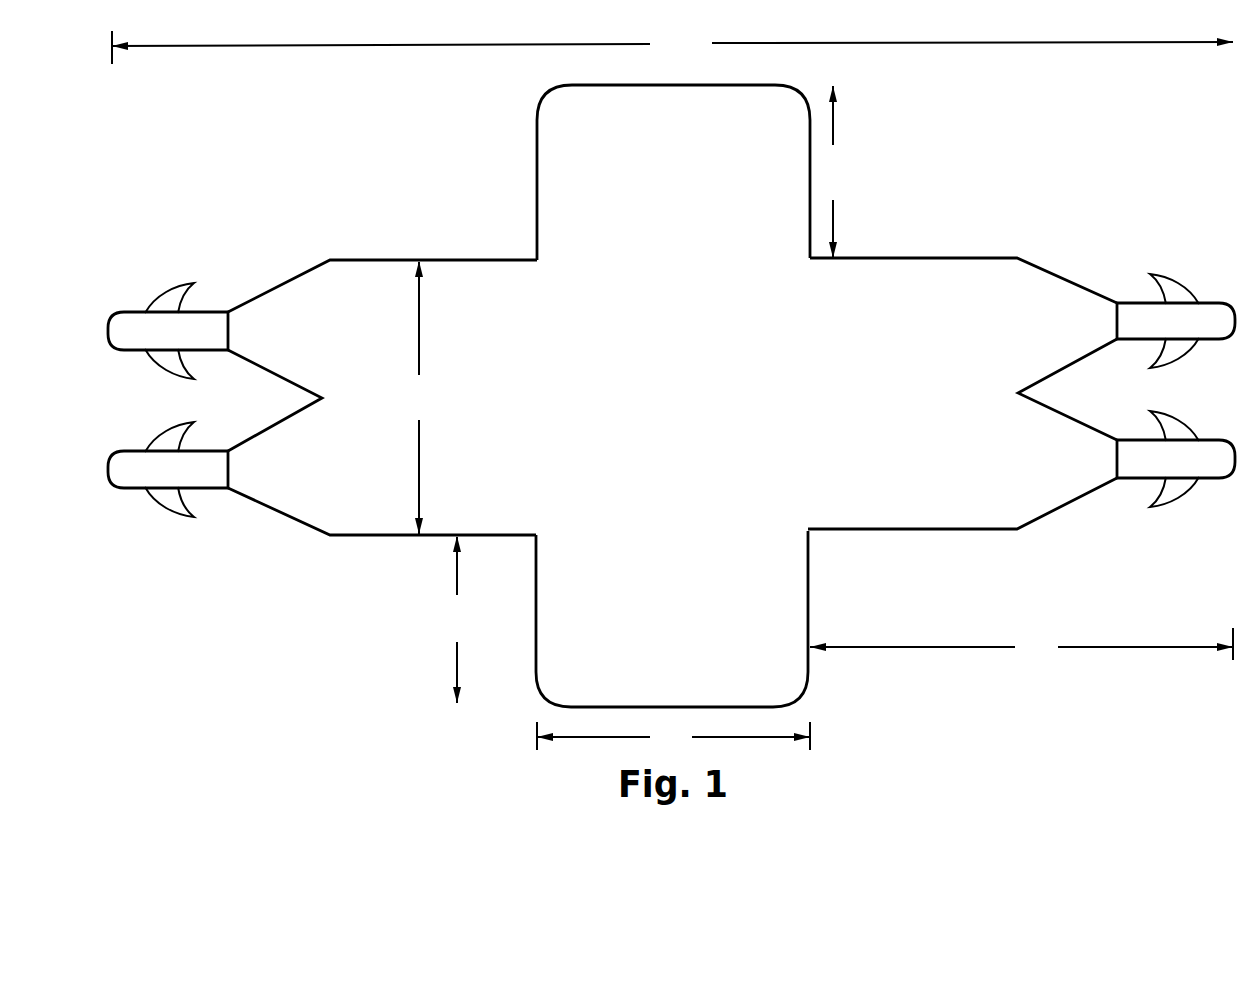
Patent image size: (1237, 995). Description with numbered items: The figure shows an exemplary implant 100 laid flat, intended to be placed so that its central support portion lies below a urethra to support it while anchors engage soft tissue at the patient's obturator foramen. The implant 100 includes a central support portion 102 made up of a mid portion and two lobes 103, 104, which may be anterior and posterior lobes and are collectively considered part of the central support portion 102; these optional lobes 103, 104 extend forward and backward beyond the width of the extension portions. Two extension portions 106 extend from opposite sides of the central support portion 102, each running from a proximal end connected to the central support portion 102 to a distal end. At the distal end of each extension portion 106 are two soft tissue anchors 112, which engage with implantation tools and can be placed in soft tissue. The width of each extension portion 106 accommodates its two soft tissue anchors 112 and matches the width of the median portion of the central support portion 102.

The implant 100 is at (355, 648).
The central support portion 102 is at (486, 218).
The lobe 103 is at (683, 154).
The lobe 104 is at (677, 629).
The extension portion 106 is at (331, 345).
The soft tissue anchor 112 is at (128, 322).